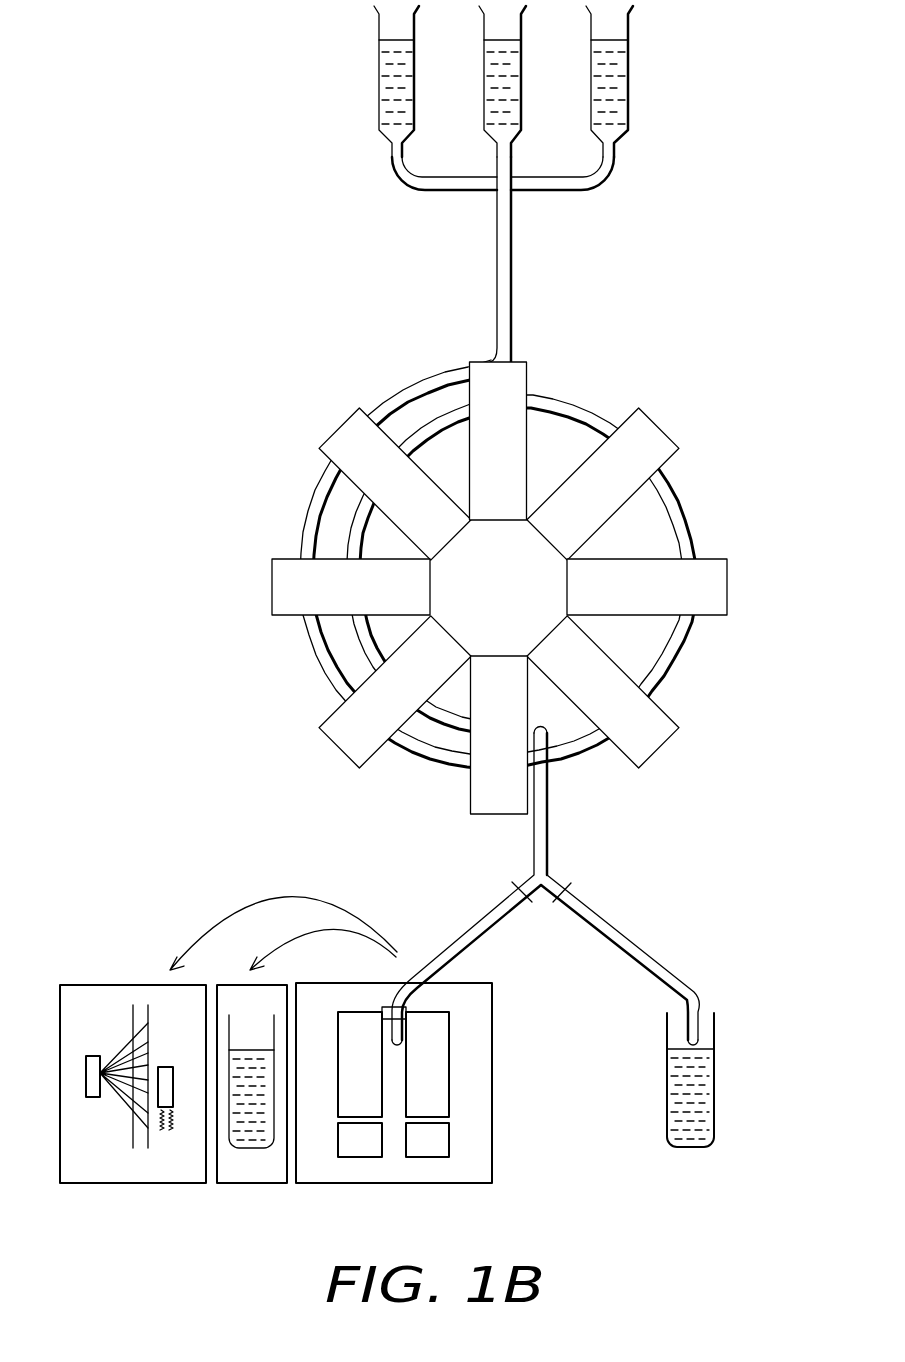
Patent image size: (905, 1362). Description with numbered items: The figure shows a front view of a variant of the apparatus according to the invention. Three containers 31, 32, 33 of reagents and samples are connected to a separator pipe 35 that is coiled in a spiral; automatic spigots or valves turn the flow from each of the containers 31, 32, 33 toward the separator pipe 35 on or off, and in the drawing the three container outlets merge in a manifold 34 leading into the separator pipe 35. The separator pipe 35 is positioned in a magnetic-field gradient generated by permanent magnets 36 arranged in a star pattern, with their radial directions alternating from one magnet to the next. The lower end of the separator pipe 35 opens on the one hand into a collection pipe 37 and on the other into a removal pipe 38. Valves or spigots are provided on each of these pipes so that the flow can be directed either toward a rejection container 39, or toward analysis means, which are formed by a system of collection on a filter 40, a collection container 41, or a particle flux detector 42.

The container 31 is at (380, 81).
The container 32 is at (485, 81).
The container 33 is at (591, 81).
The mixing manifold 34 is at (516, 189).
The separator pipe 35 is at (517, 259).
The permanent magnets 36 is at (499, 587).
The collection pipe 37 is at (469, 886).
The removal pipe 38 is at (620, 960).
The rejection container 39 is at (690, 1103).
The system of collection on a filter 40 is at (394, 1106).
The collection container 41 is at (252, 1107).
The particle flux detector 42 is at (133, 1107).